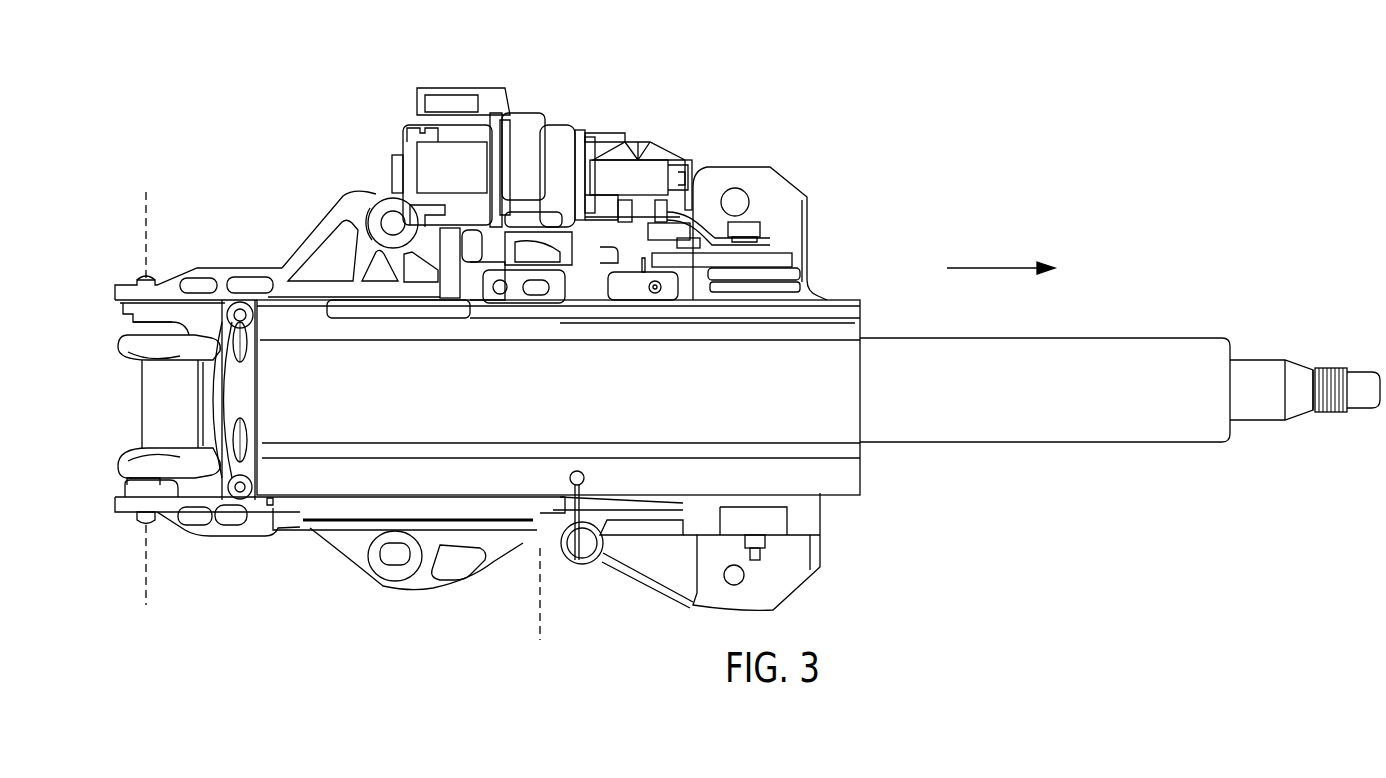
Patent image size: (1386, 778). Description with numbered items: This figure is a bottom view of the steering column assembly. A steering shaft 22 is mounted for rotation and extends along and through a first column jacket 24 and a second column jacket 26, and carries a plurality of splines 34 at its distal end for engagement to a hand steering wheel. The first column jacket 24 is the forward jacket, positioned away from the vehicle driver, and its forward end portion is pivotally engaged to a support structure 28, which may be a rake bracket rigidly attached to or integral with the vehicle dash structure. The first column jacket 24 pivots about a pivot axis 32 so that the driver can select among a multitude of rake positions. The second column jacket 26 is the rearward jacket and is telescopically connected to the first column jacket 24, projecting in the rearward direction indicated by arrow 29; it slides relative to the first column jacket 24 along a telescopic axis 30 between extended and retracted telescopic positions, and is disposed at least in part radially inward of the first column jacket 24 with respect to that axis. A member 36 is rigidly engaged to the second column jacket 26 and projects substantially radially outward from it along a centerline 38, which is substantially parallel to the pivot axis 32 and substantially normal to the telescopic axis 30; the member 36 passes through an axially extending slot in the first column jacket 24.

The steering shaft 22 is at (1255, 370).
The first column jacket 24 is at (860, 462).
The second column jacket 26 is at (1042, 428).
The support structure 28 is at (313, 528).
The arrow 29 is at (990, 264).
The telescopic axis 30 is at (142, 393).
The pivot axis 32 is at (147, 238).
The splines 34 is at (1337, 413).
The member 36 is at (538, 512).
The centerline 38 is at (542, 602).